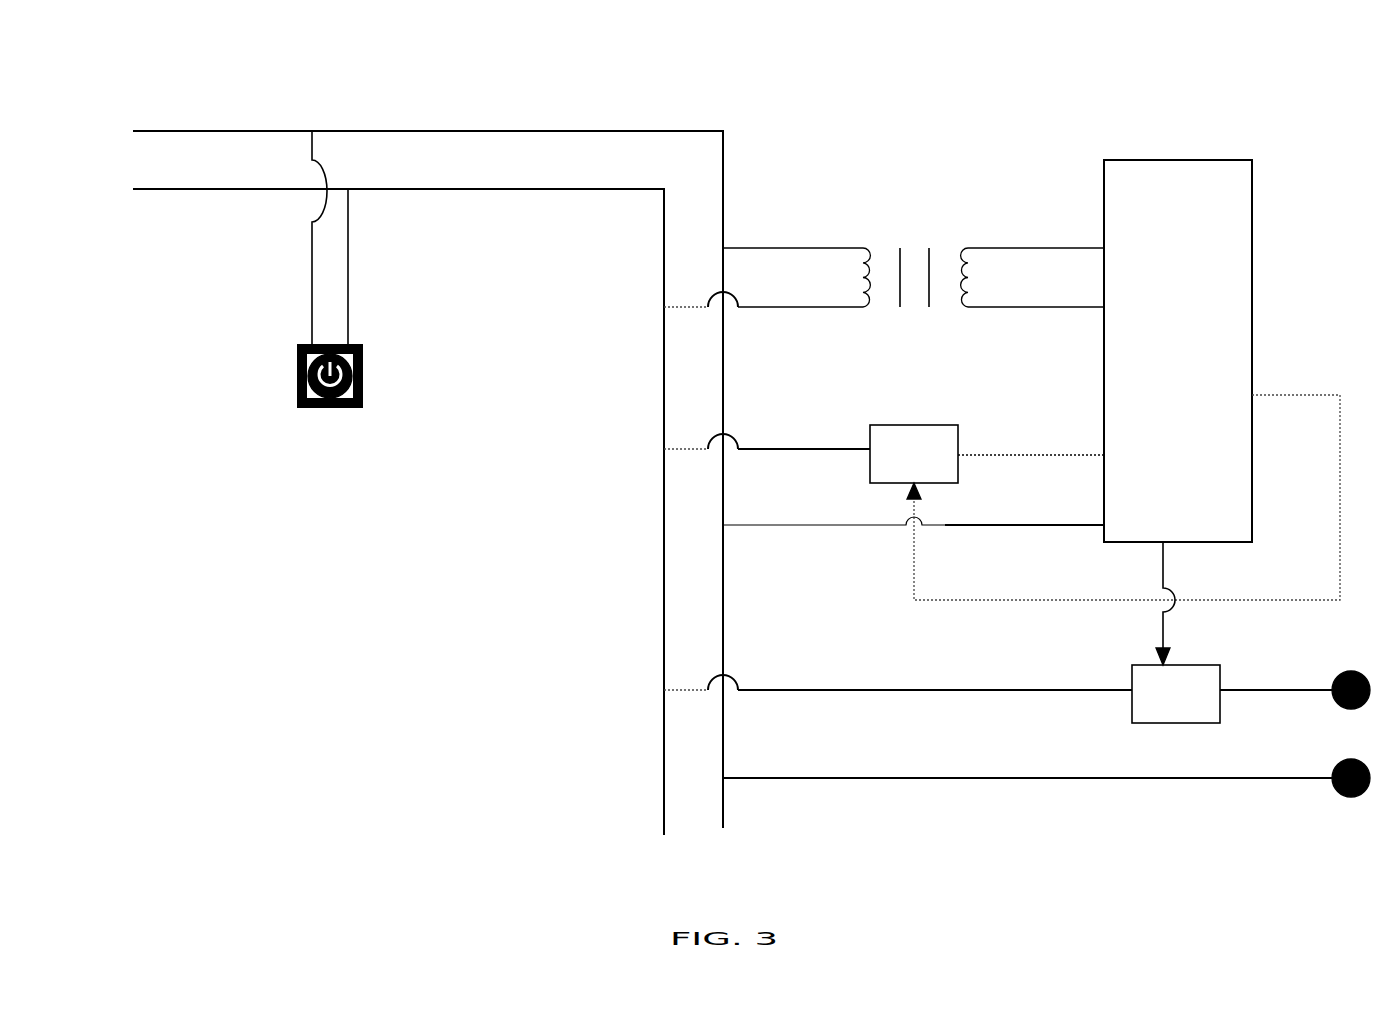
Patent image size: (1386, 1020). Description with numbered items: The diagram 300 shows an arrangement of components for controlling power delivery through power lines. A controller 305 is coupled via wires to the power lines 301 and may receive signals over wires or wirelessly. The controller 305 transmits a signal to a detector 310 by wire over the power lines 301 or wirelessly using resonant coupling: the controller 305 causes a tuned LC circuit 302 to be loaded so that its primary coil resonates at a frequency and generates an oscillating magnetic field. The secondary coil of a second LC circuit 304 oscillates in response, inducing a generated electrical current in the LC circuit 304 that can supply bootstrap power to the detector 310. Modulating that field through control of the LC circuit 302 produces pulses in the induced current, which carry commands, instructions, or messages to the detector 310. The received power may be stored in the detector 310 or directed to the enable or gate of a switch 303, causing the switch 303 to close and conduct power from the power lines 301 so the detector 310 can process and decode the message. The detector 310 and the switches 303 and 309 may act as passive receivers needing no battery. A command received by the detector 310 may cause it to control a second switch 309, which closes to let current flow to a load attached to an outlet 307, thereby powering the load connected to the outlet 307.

The system 300 is at (702, 38).
The power lines 301 is at (230, 128).
The tuned LC circuit 302 is at (826, 245).
The switch 303 is at (921, 435).
The second LC circuit 304 is at (1029, 245).
The controller 305 is at (296, 340).
The outlet 307 is at (1052, 734).
The second switch 309 is at (1044, 651).
The detector 310 is at (1031, 335).